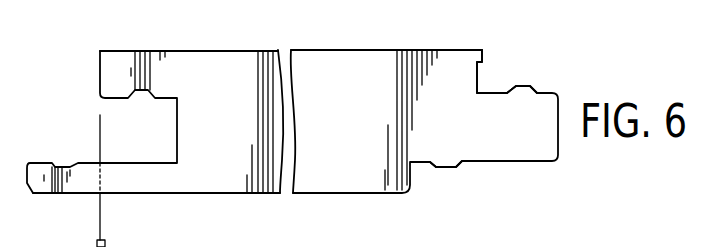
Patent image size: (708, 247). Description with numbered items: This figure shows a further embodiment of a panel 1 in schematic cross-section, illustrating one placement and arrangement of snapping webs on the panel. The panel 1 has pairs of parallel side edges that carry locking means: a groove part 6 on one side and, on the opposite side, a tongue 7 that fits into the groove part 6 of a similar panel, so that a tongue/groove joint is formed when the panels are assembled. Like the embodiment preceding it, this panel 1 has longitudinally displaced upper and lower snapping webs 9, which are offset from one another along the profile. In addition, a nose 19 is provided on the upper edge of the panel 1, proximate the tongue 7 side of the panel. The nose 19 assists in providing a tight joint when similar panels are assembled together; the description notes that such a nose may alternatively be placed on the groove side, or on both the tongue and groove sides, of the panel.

The panel 1 is at (256, 50).
The groove part 6 is at (94, 162).
The tongue 7 is at (535, 138).
The snapping webs 9 is at (524, 88).
The nose 19 is at (482, 53).